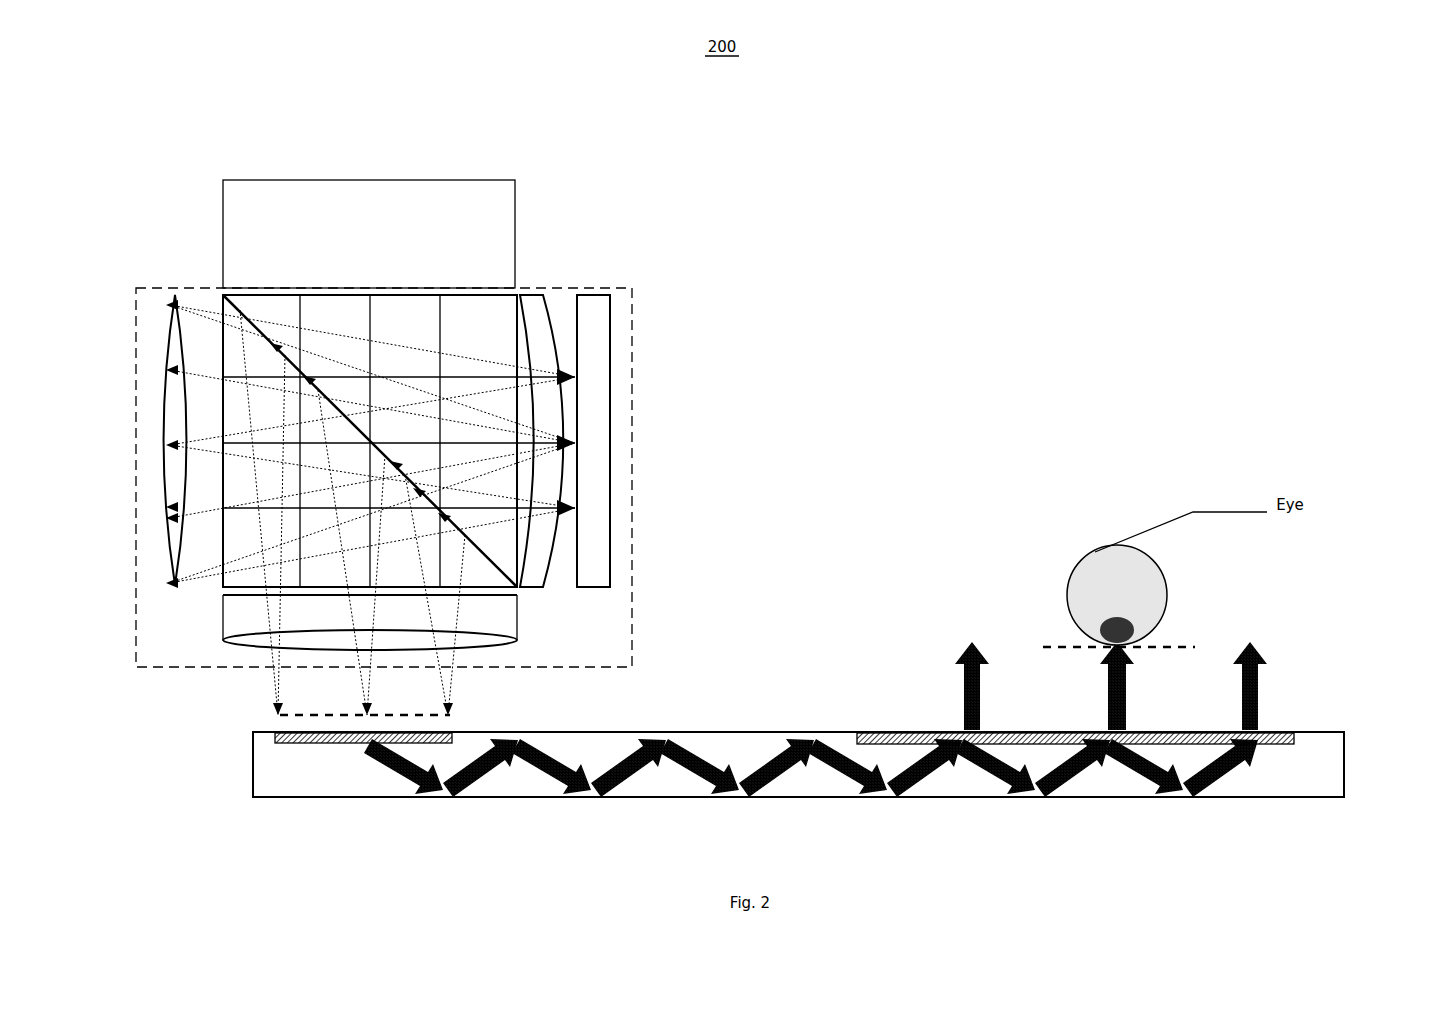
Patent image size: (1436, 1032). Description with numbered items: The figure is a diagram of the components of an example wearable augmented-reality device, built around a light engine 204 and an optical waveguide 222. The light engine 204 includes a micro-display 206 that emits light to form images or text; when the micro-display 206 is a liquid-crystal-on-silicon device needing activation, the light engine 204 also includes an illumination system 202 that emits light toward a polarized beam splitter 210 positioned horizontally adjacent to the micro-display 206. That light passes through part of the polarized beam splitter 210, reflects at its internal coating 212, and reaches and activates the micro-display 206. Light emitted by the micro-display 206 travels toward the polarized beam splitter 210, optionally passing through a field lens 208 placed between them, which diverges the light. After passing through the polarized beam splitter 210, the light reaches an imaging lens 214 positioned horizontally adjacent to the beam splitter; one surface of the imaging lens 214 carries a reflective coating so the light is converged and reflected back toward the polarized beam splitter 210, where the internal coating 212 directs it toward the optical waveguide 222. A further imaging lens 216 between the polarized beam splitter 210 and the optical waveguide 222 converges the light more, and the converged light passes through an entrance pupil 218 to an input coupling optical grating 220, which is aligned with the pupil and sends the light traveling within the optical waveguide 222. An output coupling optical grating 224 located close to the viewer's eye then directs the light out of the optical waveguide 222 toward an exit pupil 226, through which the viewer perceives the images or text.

The illumination system 202 is at (355, 192).
The light engine 204 is at (447, 435).
The micro-display 206 is at (712, 441).
The field lens 208 is at (657, 456).
The polarized beam splitter 210 is at (532, 485).
The internal coating 212 is at (471, 502).
The imaging lens 214 is at (140, 365).
The imaging lens 216 is at (290, 655).
The entrance pupil 218 is at (307, 716).
The input coupling optical grating 220 is at (273, 783).
The optical waveguide 222 is at (798, 764).
The output coupling optical grating 224 is at (1146, 681).
The exit pupil 226 is at (1042, 572).